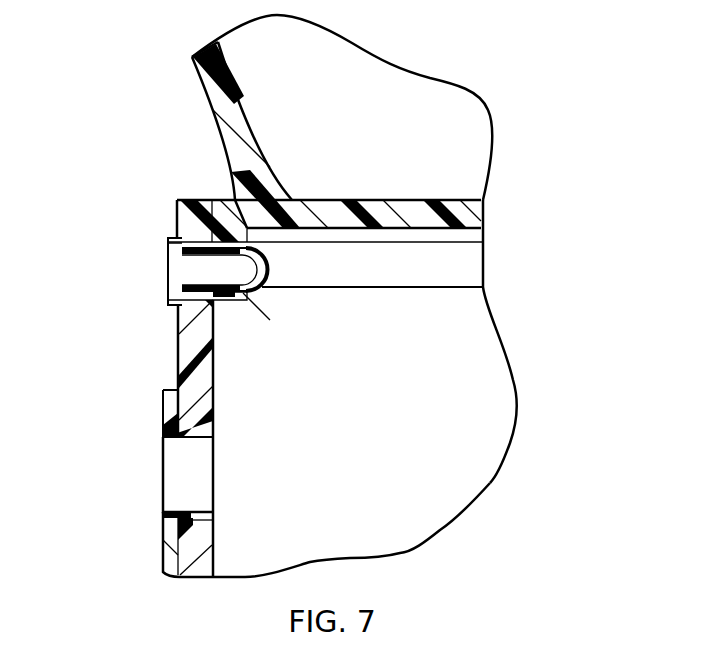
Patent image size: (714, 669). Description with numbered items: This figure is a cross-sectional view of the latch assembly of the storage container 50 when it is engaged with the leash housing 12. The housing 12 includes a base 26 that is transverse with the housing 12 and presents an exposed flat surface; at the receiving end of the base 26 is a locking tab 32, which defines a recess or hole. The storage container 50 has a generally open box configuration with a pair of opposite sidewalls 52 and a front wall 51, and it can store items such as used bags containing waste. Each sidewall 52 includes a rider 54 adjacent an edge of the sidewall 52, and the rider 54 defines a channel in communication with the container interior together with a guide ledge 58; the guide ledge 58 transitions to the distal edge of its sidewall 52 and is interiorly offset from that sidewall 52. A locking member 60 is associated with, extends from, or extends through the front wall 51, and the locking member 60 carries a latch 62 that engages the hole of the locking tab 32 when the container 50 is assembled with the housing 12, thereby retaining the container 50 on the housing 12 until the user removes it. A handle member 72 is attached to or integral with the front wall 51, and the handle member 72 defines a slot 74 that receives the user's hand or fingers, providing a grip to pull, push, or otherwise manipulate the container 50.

The housing 12 is at (182, 73).
The base 26 is at (233, 200).
The guide ledge 58 is at (463, 233).
The rider 54 is at (462, 262).
The locking member 60 is at (168, 270).
The latch 62 is at (228, 303).
The locking tab 32 is at (245, 323).
The front wall 51 is at (179, 350).
The slot 74 is at (177, 472).
The handle member 72 is at (163, 530).
The sidewall 52 is at (495, 378).
The storage container 50 is at (503, 486).